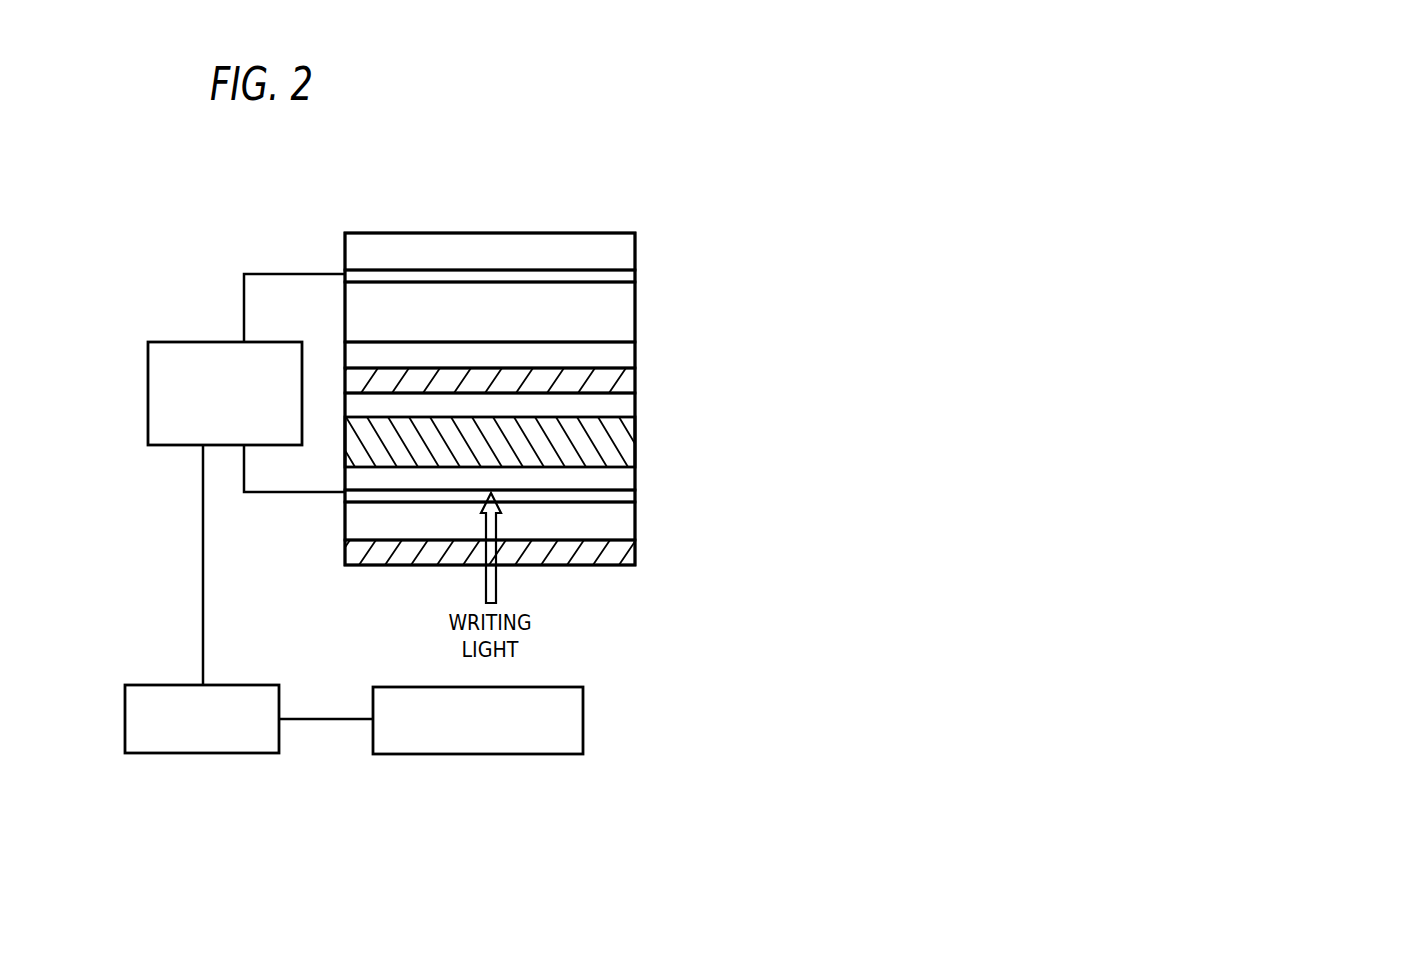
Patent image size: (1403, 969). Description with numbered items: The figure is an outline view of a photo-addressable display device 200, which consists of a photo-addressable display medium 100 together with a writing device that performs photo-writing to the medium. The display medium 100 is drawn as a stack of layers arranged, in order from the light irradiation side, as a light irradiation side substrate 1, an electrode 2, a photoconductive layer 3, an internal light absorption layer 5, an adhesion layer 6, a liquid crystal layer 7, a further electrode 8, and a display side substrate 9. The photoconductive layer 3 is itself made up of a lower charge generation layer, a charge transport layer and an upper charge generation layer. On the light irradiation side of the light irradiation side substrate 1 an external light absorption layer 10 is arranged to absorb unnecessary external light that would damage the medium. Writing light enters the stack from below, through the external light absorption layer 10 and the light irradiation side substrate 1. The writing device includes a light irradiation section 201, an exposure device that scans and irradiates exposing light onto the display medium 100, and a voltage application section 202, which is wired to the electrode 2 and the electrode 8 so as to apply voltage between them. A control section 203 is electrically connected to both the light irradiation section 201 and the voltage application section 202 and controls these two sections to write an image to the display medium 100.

The light irradiation side substrate 1 is at (627, 525).
The electrode 2 is at (627, 497).
The photoconductive layer 3 is at (642, 393).
The internal light absorption layer 5 is at (628, 383).
The adhesion layer 6 is at (628, 357).
The liquid crystal layer 7 is at (628, 317).
The electrode 8 is at (628, 277).
The display side substrate 9 is at (628, 253).
The external light absorption layer 10 is at (628, 553).
The photo-addressable display medium 100 is at (1108, 213).
The photo-addressable display device 200 is at (658, 166).
The light irradiation section 201 is at (553, 687).
The voltage application section 202 is at (272, 342).
The control section 203 is at (247, 685).